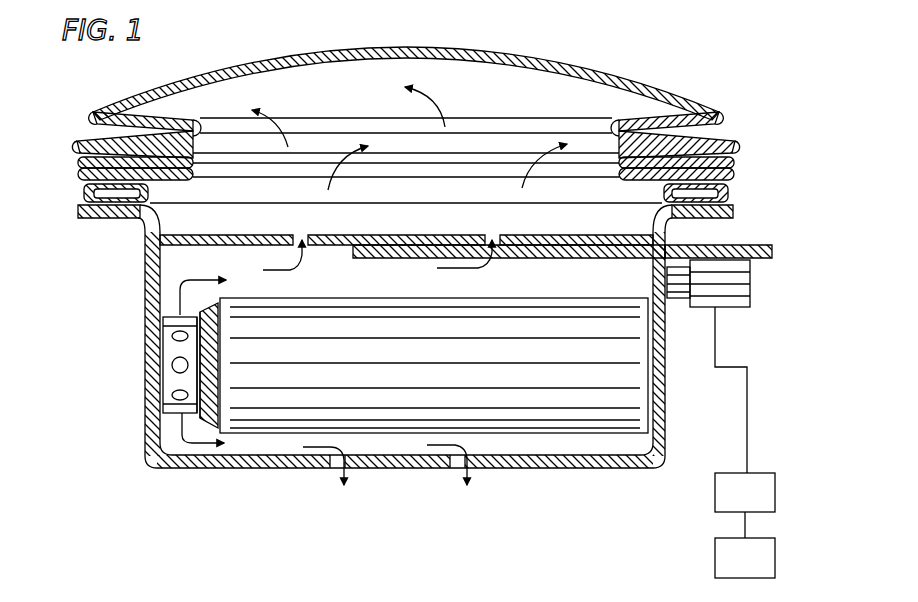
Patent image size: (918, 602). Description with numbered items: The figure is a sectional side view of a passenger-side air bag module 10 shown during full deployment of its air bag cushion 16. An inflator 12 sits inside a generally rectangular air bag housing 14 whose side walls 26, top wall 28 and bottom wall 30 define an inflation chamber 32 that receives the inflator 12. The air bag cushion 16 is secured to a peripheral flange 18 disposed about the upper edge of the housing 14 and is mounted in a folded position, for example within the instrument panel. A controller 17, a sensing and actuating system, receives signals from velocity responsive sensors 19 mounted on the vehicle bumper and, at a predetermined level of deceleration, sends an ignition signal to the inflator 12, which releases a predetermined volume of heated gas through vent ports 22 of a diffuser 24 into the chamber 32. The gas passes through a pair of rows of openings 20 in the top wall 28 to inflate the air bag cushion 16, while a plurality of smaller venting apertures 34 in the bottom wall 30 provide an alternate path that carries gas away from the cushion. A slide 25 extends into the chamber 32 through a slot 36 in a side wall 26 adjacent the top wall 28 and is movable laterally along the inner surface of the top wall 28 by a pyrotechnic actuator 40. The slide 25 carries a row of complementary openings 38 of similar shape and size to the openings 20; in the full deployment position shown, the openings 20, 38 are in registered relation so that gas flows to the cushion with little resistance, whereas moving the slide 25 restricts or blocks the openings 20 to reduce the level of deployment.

The air bag module 10 is at (605, 52).
The inflator 12 is at (545, 410).
The air bag housing 14 is at (670, 402).
The air bag cushion 16 is at (499, 52).
The controller 17 is at (715, 497).
The peripheral flange 18 is at (104, 220).
The velocity responsive sensors 19 is at (715, 560).
The openings 20 is at (275, 236).
The vent ports 22 is at (174, 393).
The diffuser 24 is at (178, 319).
The slide 25 is at (760, 262).
The side walls 26 is at (158, 348).
The top wall 28 is at (385, 233).
The bottom wall 30 is at (258, 462).
The inflation chamber 32 is at (170, 271).
The venting apertures 34 is at (453, 470).
The slot 36 is at (667, 242).
The complementary openings 38 is at (514, 254).
The pyrotechnic actuator 40 is at (720, 304).